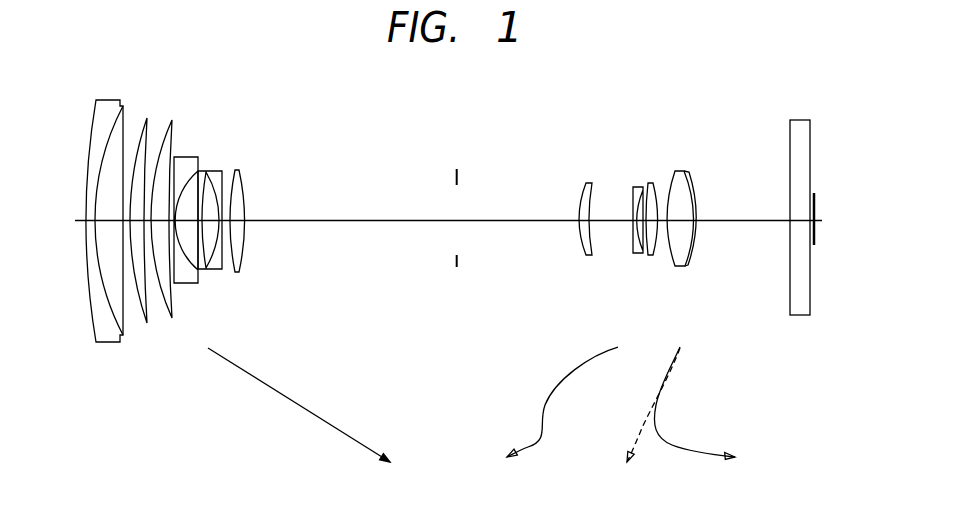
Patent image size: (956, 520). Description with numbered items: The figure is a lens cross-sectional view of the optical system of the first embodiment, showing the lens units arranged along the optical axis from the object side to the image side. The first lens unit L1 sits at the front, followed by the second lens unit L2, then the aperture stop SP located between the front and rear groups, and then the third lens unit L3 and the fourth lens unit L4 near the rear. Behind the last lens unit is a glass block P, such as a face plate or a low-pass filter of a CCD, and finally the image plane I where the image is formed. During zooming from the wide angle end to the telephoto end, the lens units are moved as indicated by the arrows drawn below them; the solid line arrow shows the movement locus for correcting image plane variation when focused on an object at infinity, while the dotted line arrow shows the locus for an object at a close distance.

The first lens unit L1 is at (167, 92).
The second lens unit L2 is at (243, 92).
The third lens unit L3 is at (655, 90).
The fourth lens unit L4 is at (694, 90).
The aperture stop SP is at (457, 267).
The glass block P is at (809, 90).
The image plane I is at (814, 193).